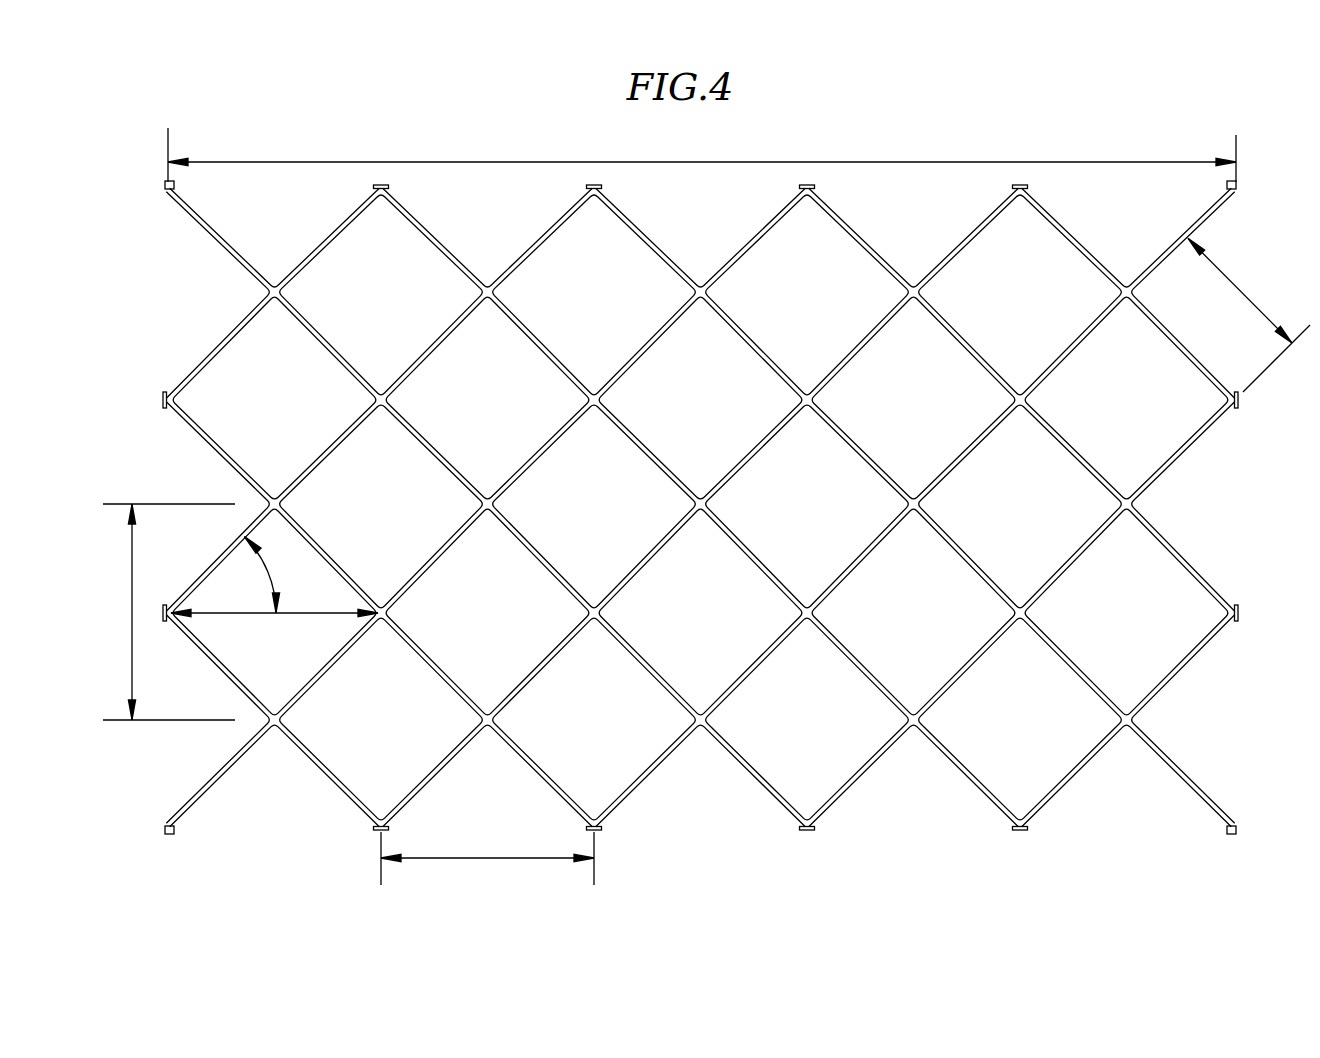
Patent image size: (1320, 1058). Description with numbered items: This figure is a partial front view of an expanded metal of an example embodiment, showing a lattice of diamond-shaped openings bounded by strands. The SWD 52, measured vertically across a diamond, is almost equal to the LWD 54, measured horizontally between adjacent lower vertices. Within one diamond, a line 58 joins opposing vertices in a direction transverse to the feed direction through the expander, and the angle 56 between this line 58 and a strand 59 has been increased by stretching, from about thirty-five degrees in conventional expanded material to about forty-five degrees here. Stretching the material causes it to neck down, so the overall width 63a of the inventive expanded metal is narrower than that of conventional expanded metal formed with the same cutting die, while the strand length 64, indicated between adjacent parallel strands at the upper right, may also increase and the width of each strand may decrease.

The width 63a is at (705, 161).
The strand length 64 is at (1231, 282).
The strand 59 is at (252, 522).
The angle 56 is at (267, 573).
The line 58 is at (233, 615).
The SWD 52 is at (132, 612).
The LWD 54 is at (490, 860).